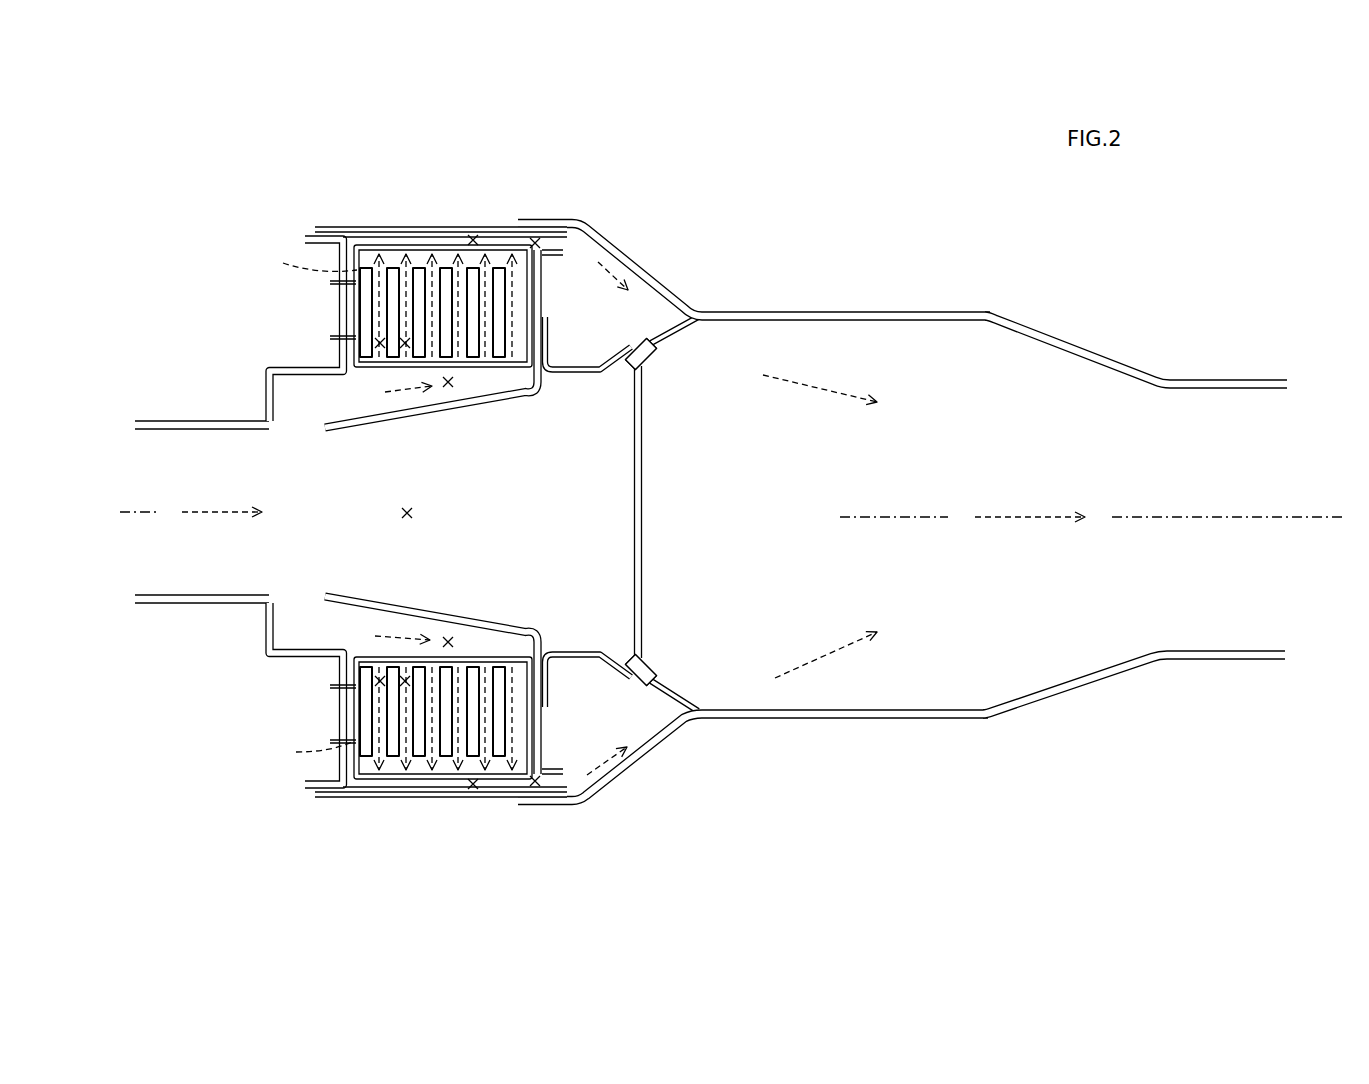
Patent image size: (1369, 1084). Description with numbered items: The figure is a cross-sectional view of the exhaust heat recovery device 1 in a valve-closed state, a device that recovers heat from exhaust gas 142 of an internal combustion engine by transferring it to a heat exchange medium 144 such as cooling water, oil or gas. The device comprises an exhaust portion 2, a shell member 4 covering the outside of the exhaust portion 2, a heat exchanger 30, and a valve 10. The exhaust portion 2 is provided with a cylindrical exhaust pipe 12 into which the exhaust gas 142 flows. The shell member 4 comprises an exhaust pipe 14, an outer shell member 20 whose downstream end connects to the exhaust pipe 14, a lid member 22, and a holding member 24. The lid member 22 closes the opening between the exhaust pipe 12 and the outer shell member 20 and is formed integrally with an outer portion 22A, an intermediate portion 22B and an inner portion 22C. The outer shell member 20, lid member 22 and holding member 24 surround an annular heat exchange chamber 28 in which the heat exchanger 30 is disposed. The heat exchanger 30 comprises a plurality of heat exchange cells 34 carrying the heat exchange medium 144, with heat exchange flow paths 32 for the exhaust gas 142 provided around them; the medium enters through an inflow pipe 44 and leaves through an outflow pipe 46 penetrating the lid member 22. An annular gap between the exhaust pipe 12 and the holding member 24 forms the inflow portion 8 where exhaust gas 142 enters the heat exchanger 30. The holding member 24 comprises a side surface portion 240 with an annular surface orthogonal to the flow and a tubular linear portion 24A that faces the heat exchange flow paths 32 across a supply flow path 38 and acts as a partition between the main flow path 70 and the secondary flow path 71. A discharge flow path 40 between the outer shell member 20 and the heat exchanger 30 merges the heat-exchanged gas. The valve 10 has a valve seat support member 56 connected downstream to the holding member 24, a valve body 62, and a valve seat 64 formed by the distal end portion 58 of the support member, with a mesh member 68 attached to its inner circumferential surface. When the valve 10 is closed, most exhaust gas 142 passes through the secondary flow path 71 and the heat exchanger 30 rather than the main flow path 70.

The exhaust heat recovery device 1 is at (780, 195).
The exhaust portion 2 is at (200, 662).
The shell member 4 is at (314, 195).
The inflow portion 8 is at (290, 425).
The valve 10 is at (648, 452).
The exhaust pipe 12 is at (170, 420).
The exhaust pipe 14 is at (947, 312).
The outer shell member 20 is at (363, 228).
The lid member 22 is at (325, 258).
The outer portion 22A is at (341, 345).
The intermediate portion 22B is at (280, 368).
The inner portion 22C is at (266, 388).
The holding member 24 is at (568, 232).
The linear portion 24A is at (406, 410).
The heat exchange chamber 28 is at (418, 222).
The heat exchanger 30 is at (498, 247).
The heat exchange flow path 32 is at (352, 368).
The heat exchange cell 34 is at (417, 252).
The supply flow path 38 is at (450, 390).
The discharge flow path 40 is at (473, 236).
The inflow pipe 44 is at (333, 705).
The outflow pipe 46 is at (338, 288).
The valve seat support member 56 is at (595, 358).
The distal end portion 58 is at (640, 346).
The valve body 62 is at (637, 582).
The valve seat 64 is at (640, 511).
The mesh member 68 is at (650, 350).
The main flow path 70 is at (412, 514).
The secondary flow path 71 is at (541, 225).
The exhaust gas 142 is at (633, 513).
The heat exchange medium 144 is at (298, 308).
The side surface portion 240 is at (545, 398).